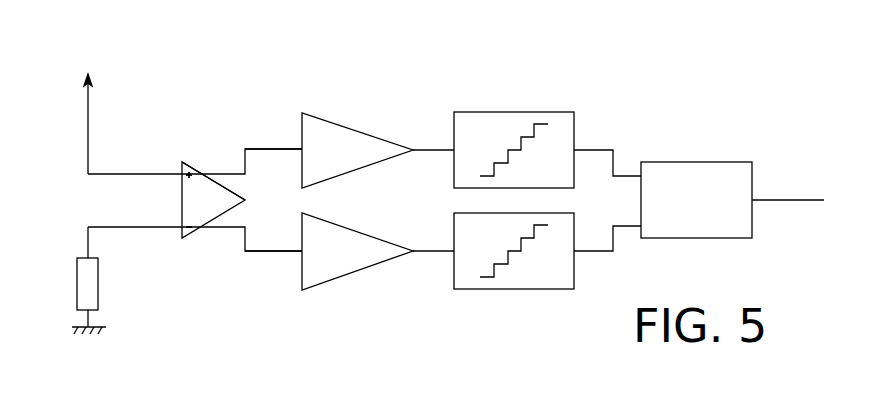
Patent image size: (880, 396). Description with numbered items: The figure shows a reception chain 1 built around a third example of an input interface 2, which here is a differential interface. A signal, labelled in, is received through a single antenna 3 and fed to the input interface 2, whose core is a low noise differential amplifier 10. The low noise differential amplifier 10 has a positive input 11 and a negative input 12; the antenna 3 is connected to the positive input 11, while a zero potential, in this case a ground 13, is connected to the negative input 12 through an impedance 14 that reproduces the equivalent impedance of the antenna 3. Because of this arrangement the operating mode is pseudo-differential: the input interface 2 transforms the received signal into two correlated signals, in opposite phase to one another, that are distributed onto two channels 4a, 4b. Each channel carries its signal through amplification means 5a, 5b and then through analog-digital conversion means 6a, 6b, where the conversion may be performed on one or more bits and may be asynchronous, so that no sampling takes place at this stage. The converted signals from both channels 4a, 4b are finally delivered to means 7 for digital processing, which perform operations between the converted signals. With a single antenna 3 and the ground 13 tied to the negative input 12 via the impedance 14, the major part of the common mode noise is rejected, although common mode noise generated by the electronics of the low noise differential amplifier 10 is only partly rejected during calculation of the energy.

The reception chain 1 is at (652, 63).
The input interface 2 is at (170, 252).
The antenna 3 is at (88, 115).
The channel 4a is at (270, 148).
The channel 4b is at (272, 254).
The amplification means 5a is at (380, 133).
The amplification means 5b is at (383, 264).
The analog-digital conversion means 6a is at (495, 119).
The analog-digital conversion means 6b is at (527, 283).
The means for digital processing 7 is at (697, 231).
The low noise differential amplifier 10 is at (202, 189).
The positive input 11 is at (178, 164).
The negative input 12 is at (178, 218).
The ground 13 is at (105, 330).
The impedance 14 is at (77, 285).